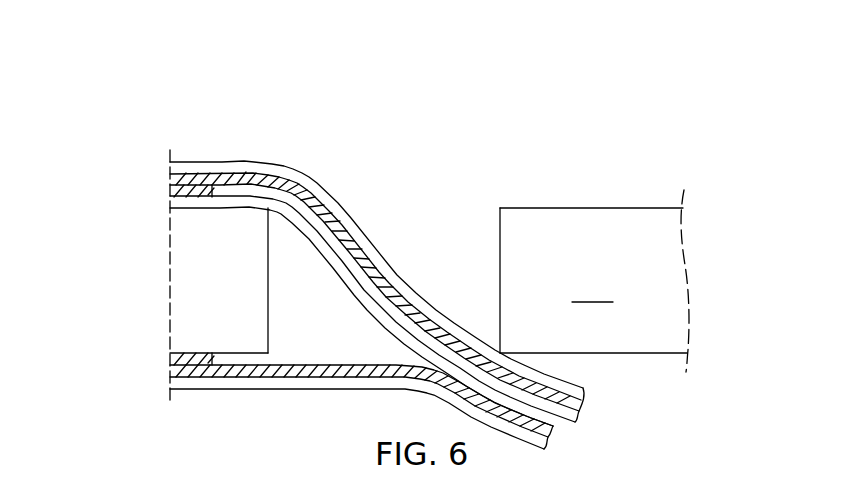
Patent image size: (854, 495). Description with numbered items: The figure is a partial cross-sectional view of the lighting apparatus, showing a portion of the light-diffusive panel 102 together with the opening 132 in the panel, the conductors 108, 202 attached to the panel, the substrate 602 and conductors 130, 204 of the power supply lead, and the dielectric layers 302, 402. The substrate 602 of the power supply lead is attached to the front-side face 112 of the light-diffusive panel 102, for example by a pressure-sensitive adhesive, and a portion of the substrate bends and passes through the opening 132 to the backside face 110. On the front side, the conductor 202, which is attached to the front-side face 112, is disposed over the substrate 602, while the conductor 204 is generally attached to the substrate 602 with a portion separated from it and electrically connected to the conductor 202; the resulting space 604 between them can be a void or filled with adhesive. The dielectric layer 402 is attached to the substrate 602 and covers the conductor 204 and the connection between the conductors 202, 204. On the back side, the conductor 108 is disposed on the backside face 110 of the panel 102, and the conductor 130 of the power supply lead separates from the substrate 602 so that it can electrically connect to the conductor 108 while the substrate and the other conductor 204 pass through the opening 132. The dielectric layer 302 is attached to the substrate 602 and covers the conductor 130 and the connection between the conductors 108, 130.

The light-diffusive panel 102 is at (594, 281).
The conductor 108 is at (171, 362).
The backside face 110 is at (652, 355).
The front-side face 112 is at (595, 208).
The conductor 130 is at (172, 370).
The opening 132 is at (423, 240).
The conductor 202 is at (174, 189).
The conductor 204 is at (172, 178).
The dielectric layer 302 is at (180, 383).
The dielectric layer 402 is at (172, 163).
The substrate 602 is at (178, 202).
The space 604 is at (247, 193).